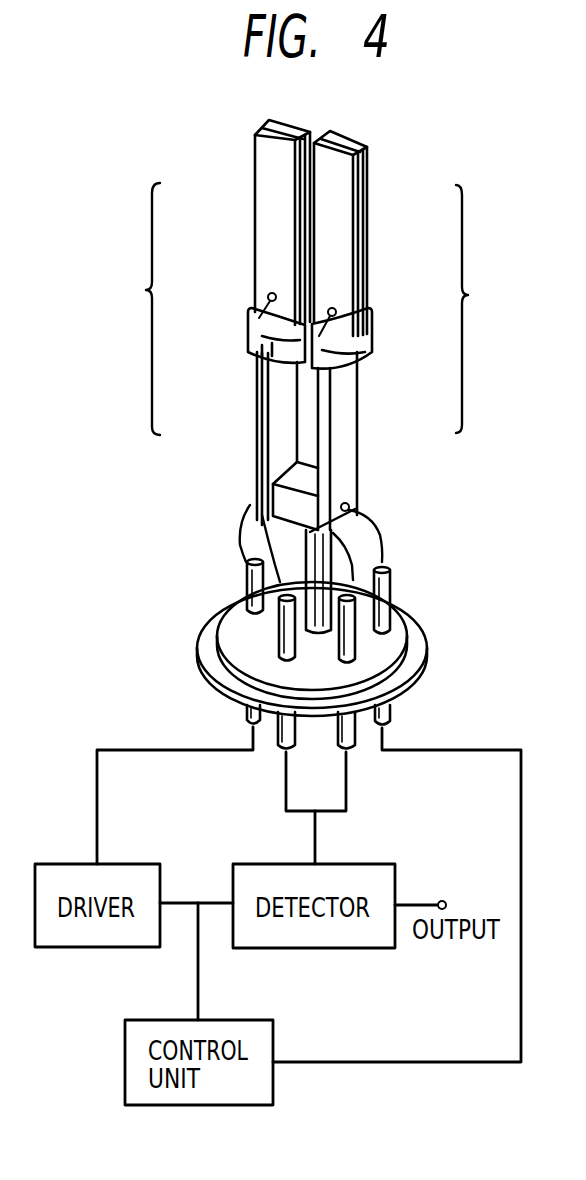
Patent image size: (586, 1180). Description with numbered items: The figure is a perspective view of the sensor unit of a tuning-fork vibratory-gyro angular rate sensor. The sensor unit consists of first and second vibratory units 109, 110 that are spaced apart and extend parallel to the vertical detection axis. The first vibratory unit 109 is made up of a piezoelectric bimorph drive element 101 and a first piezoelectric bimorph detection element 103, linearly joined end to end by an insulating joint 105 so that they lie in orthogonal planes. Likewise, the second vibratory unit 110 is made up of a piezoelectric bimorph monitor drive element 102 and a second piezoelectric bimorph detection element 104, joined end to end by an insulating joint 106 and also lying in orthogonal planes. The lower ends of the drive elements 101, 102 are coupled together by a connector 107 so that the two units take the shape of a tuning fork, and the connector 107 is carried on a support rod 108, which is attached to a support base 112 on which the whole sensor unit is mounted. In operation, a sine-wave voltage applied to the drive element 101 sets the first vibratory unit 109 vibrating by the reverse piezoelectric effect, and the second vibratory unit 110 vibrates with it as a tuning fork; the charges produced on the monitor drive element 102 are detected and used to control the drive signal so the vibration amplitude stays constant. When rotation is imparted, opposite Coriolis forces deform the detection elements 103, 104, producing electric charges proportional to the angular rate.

The piezoelectric bimorph drive element 101 is at (288, 436).
The piezoelectric bimorph monitor drive element 102 is at (352, 428).
The first piezoelectric bimorph detection element 103 is at (270, 214).
The second piezoelectric bimorph detection element 104 is at (345, 222).
The insulating joint 105 is at (250, 335).
The insulating joint 106 is at (345, 343).
The connector 107 is at (278, 495).
The support rod 108 is at (360, 565).
The first vibratory unit 109 is at (135, 309).
The second vibratory unit 110 is at (482, 309).
The support base 112 is at (400, 638).